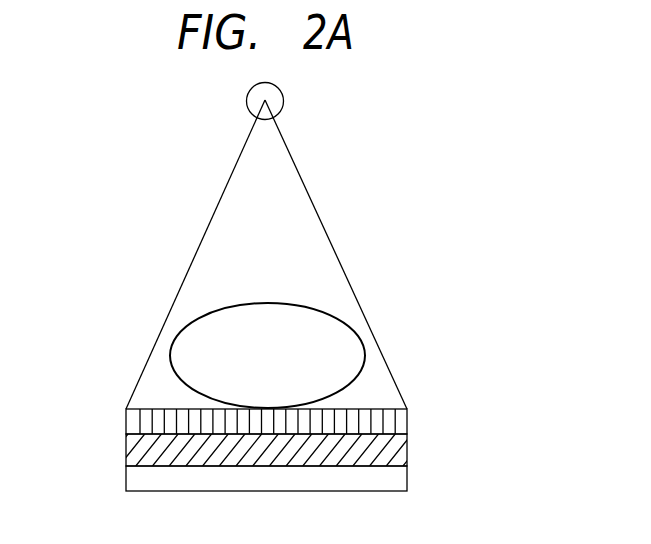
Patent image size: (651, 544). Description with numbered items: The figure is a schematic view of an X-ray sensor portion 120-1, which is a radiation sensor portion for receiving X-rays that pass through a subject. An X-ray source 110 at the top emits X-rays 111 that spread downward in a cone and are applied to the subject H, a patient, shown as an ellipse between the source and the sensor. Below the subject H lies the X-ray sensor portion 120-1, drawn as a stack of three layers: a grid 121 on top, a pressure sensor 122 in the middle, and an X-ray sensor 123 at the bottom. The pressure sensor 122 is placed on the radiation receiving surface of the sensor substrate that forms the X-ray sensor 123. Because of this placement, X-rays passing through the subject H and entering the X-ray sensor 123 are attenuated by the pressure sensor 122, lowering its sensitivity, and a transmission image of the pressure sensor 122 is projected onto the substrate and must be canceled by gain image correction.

The X-ray source 110 is at (284, 103).
The X-rays 111 is at (321, 222).
The subject H is at (345, 327).
The X-ray sensor portion 120-1 is at (249, 452).
The grid 121 is at (398, 420).
The pressure sensor 122 is at (397, 455).
The X-ray sensor 123 is at (400, 477).